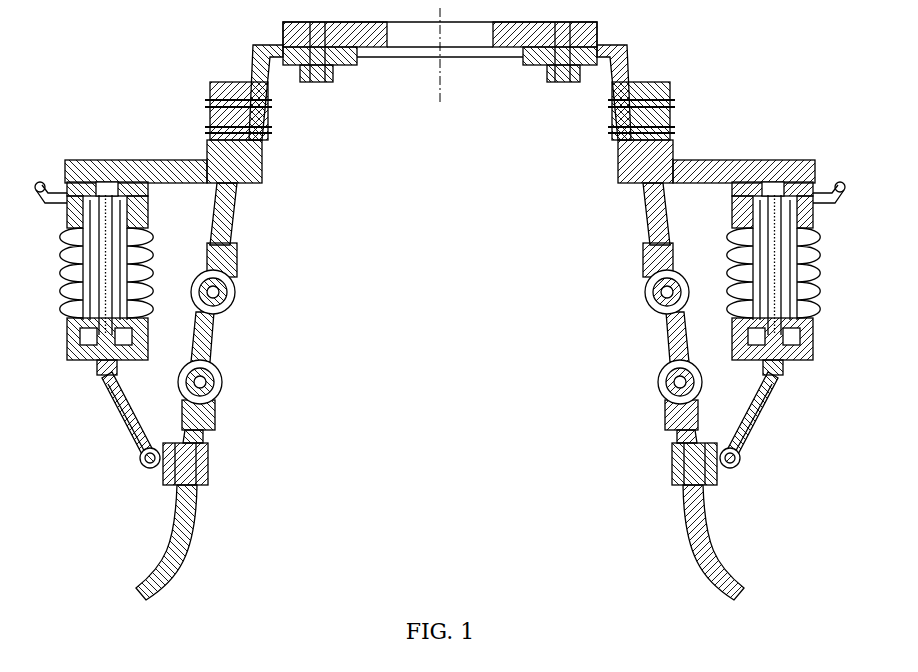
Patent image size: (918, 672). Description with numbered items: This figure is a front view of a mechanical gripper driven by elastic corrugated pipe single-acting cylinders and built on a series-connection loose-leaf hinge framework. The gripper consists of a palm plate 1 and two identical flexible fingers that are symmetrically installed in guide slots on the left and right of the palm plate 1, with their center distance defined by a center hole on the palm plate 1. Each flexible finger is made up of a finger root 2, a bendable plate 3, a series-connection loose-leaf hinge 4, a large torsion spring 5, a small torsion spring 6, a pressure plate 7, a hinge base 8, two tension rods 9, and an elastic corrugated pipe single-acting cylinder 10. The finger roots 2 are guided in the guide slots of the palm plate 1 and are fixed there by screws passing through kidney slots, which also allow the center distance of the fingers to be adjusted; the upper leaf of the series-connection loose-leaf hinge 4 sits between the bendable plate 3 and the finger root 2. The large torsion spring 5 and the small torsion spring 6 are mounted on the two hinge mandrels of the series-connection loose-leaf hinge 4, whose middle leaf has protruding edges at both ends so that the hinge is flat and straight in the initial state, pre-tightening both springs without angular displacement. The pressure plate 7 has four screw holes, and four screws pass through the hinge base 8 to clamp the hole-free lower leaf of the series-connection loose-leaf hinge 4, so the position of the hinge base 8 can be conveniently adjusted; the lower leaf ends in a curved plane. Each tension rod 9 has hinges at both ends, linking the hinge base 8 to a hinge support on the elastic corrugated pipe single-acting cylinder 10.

The palm plate 1 is at (518, 60).
The finger root 2 is at (270, 96).
The bendable plate 3 is at (254, 186).
The series-connection loose-leaf hinge 4 is at (228, 232).
The large torsion spring 5 is at (233, 305).
The small torsion spring 6 is at (221, 393).
The pressure plate 7 is at (208, 470).
The hinge base 8 is at (165, 472).
The tension rod 9 is at (135, 430).
The elastic corrugated pipe single-acting cylinder 10 is at (92, 363).